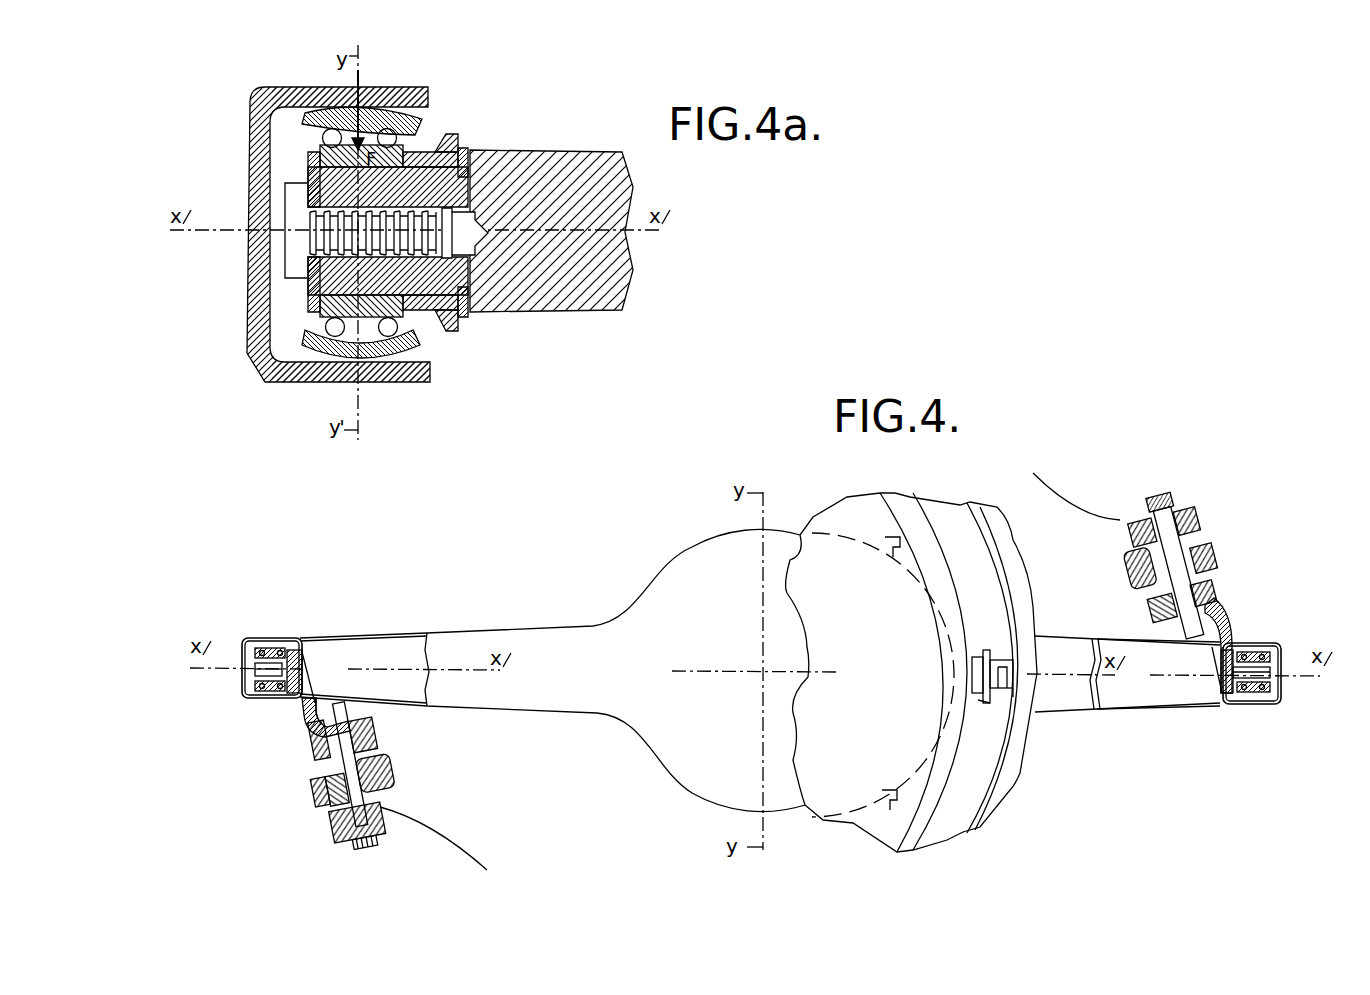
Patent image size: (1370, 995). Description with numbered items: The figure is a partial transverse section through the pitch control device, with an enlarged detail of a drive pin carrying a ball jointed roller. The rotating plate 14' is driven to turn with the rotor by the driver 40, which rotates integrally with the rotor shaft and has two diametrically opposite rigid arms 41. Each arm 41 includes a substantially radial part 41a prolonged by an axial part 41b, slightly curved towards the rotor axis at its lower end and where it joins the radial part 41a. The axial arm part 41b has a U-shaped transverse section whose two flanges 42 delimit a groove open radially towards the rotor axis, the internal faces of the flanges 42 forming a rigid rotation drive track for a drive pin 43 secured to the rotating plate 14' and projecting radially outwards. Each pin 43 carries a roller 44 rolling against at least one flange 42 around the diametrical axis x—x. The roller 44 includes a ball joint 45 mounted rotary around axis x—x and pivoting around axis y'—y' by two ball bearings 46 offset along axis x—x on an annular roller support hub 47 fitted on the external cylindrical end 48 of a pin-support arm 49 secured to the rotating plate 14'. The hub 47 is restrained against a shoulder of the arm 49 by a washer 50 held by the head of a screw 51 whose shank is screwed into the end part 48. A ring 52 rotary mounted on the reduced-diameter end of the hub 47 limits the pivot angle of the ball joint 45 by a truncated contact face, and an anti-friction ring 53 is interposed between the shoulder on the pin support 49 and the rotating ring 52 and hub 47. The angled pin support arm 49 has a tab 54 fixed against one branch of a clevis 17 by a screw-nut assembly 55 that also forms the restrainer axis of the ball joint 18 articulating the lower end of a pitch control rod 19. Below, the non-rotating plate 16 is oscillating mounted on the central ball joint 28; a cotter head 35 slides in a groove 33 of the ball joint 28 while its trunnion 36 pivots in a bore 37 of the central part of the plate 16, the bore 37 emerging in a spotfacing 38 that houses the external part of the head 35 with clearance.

In FIG. 4, the rotating plate 14' is at (750, 690).
In FIG. 4, the non-rotating plate 16 is at (953, 533).
In FIG. 4, the external radial clevis 17 is at (333, 833).
In FIG. 4, the ball joint 18 is at (328, 800).
In FIG. 4, the pitch control rod 19 is at (313, 800).
In FIG. 4, the central ball joint 28 is at (957, 583).
In FIG. 4, the groove 33 is at (978, 679).
In FIG. 4, the head 35 is at (972, 670).
In FIG. 4, the trunnion 36 is at (1017, 662).
In FIG. 4, the bore 37 is at (1017, 697).
In FIG. 4, the spotfacing 38 is at (978, 700).
In FIG. 4, the driver 40 is at (592, 616).
In FIG. 4, the rigid arm 41 is at (1067, 713).
In FIG. 4, the radial arm part 41a is at (393, 633).
In FIG. 4A, the axial arm part 41b is at (258, 135).
In FIG. 4, the axial arm part 41b is at (243, 680).
In FIG. 4A, the flange 42 is at (322, 97).
In FIG. 4, the flange 42 is at (278, 647).
In FIG. 4A, the drive pin 43 is at (460, 130).
In FIG. 4, the drive pin 43 is at (318, 657).
In FIG. 4A, the roller 44 is at (303, 325).
In FIG. 4, the roller 44 is at (262, 643).
In FIG. 4A, the ball joint 45 is at (387, 118).
In FIG. 4A, the ball bearing 46 is at (336, 336).
In FIG. 4A, the annular roller support hub 47 is at (330, 165).
In FIG. 4A, the external radial cylindrical end 48 is at (330, 196).
In FIG. 4A, the pin-support arm 49 is at (555, 185).
In FIG. 4, the pin-support arm 49 is at (380, 703).
In FIG. 4A, the washer 50 is at (312, 293).
In FIG. 4A, the screw 51 is at (292, 265).
In FIG. 4A, the ring 52 is at (450, 321).
In FIG. 4A, the anti-friction ring 53 is at (465, 152).
In FIG. 4, the tab 54 is at (300, 740).
In FIG. 4, the screw-nut assembly 55 is at (357, 813).